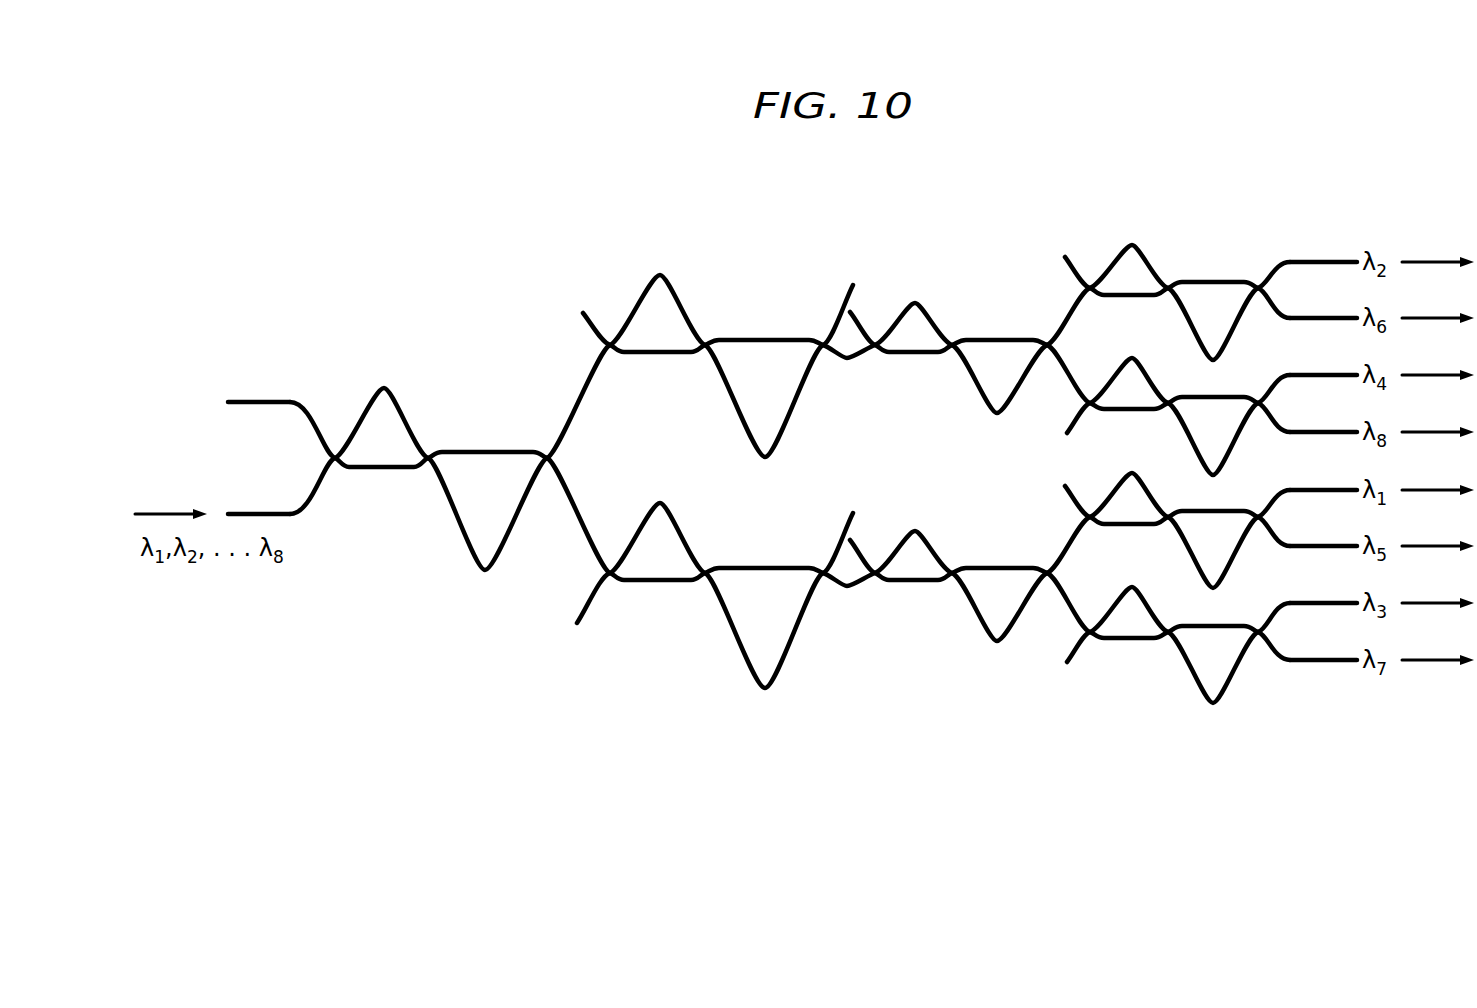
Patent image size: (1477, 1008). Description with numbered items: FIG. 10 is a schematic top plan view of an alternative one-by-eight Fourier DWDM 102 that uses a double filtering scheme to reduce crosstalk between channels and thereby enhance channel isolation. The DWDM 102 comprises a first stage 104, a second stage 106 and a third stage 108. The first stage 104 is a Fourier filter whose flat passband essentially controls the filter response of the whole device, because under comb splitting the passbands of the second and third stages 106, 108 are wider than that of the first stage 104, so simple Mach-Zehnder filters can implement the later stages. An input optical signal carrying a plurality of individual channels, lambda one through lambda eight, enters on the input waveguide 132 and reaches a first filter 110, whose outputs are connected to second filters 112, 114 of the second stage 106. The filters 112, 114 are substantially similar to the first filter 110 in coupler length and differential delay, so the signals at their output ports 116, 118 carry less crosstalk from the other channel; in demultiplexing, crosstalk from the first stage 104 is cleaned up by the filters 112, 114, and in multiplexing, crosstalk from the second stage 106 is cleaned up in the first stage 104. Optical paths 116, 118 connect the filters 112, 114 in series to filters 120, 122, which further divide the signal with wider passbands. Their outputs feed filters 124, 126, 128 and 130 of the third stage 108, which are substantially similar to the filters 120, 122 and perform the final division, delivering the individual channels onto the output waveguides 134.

The DWDM 102 is at (462, 211).
The first stage 104 is at (405, 677).
The second stage 106 is at (868, 742).
The third stage 108 is at (1165, 742).
The first filter 110 is at (429, 437).
The second filter 112 is at (705, 323).
The second filter 114 is at (705, 551).
The output port 116 is at (847, 362).
The output port 118 is at (847, 590).
The filter 120 is at (952, 323).
The filter 122 is at (952, 551).
The filter 124 is at (1168, 267).
The filter 126 is at (1168, 382).
The filter 128 is at (1168, 496).
The filter 130 is at (1168, 611).
The input waveguide 132 is at (257, 508).
The output waveguides 134 is at (1326, 260).